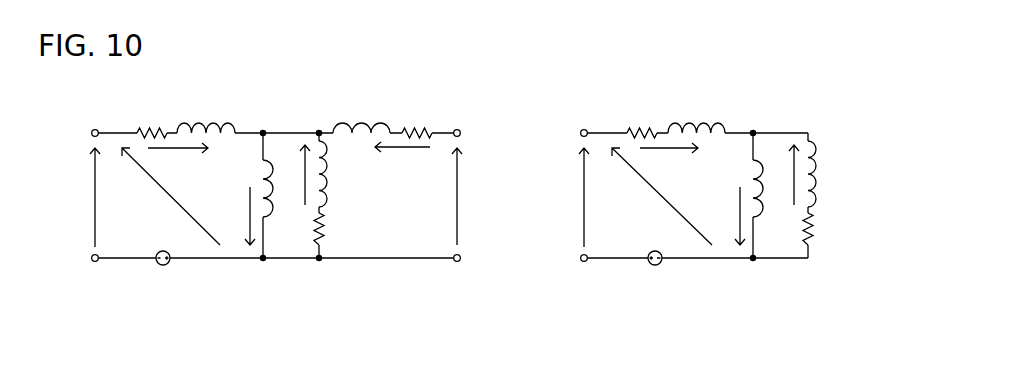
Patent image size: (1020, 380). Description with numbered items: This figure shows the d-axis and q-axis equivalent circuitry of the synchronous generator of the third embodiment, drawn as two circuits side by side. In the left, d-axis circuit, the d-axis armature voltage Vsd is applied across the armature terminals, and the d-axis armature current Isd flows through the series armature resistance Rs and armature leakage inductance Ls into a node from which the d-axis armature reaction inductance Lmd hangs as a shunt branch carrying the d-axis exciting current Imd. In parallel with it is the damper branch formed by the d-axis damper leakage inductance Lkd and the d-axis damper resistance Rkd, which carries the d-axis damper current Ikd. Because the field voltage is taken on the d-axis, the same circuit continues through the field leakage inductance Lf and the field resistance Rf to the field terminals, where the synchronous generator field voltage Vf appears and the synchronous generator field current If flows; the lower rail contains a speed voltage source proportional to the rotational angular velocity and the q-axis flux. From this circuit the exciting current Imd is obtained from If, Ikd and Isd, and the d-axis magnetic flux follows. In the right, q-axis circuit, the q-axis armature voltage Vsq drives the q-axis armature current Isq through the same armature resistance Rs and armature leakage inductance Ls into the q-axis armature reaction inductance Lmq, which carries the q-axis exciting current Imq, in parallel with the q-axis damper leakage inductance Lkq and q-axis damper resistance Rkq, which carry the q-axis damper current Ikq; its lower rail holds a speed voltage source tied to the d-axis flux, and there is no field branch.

The armature resistance Rs is at (397, 117).
The armature leakage inductance Ls is at (451, 115).
The d-axis armature reaction inductance Lmd is at (244, 188).
The d-axis damper leakage inductance Lkd is at (342, 174).
The d-axis damper resistance Rkd is at (341, 229).
The field leakage inductance Lf is at (361, 115).
The field resistance Rf is at (417, 117).
The d-axis armature voltage Vsd is at (75, 197).
The synchronous generator field voltage Vf is at (470, 196).
The d-axis armature current Isd is at (178, 159).
The d-axis exciting current Imd is at (229, 216).
The d-axis damper current Ikd is at (299, 188).
The synchronous generator field current If is at (402, 158).
The q-axis armature reaction inductance Lmq is at (733, 188).
The q-axis damper leakage inductance Lkq is at (831, 174).
The q-axis damper resistance Rkq is at (828, 229).
The q-axis armature voltage Vsq is at (563, 197).
The q-axis armature current Isq is at (669, 159).
The q-axis exciting current Imq is at (719, 216).
The q-axis damper current Ikq is at (789, 188).